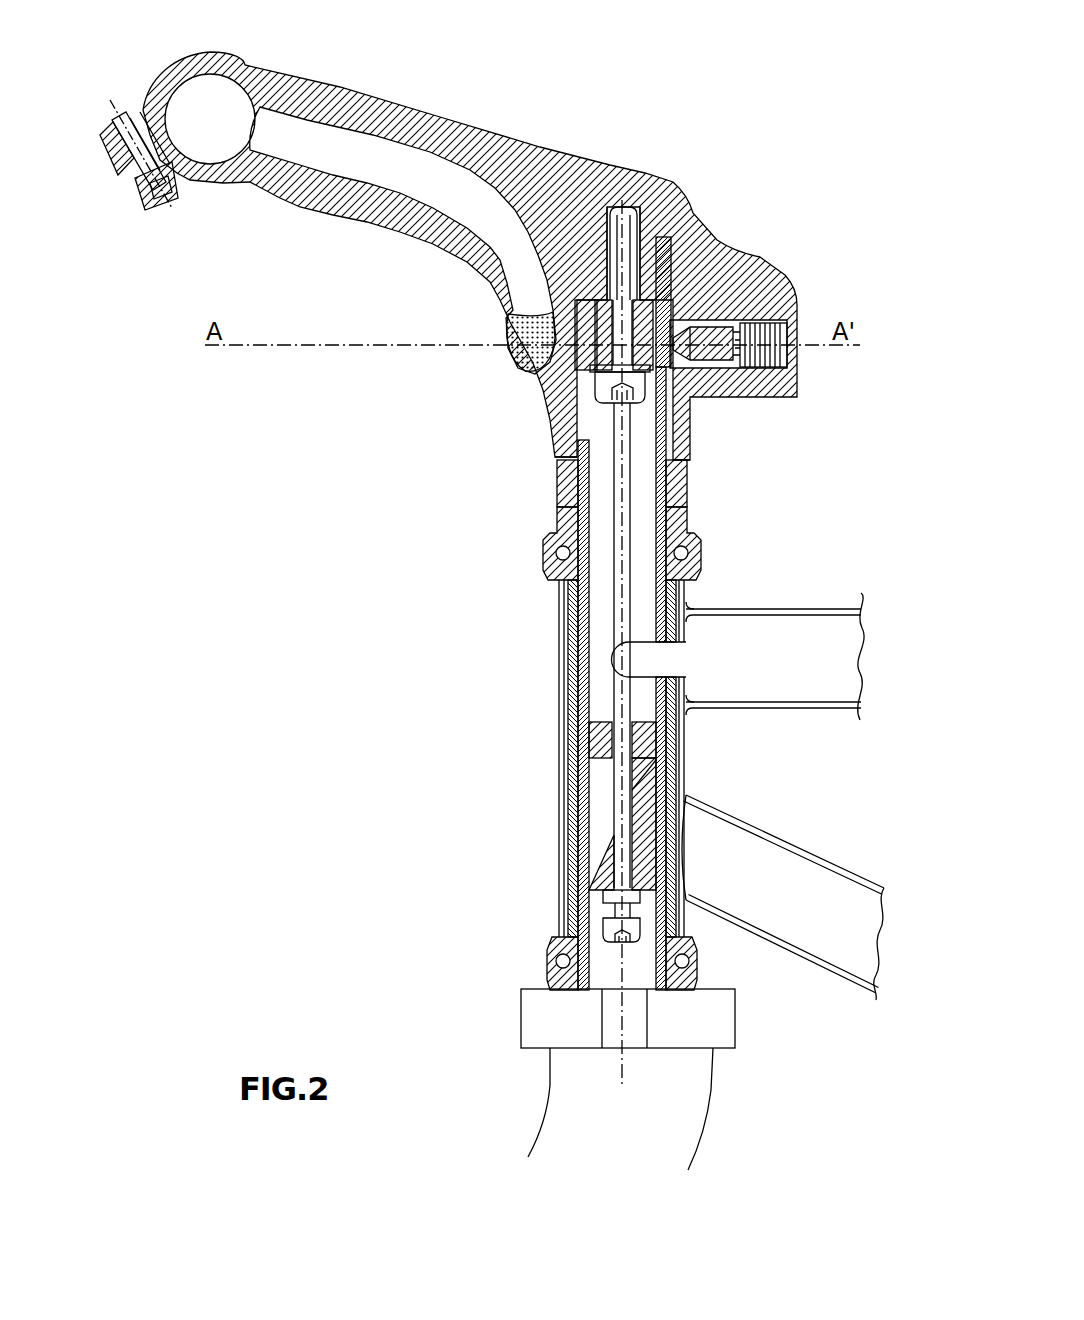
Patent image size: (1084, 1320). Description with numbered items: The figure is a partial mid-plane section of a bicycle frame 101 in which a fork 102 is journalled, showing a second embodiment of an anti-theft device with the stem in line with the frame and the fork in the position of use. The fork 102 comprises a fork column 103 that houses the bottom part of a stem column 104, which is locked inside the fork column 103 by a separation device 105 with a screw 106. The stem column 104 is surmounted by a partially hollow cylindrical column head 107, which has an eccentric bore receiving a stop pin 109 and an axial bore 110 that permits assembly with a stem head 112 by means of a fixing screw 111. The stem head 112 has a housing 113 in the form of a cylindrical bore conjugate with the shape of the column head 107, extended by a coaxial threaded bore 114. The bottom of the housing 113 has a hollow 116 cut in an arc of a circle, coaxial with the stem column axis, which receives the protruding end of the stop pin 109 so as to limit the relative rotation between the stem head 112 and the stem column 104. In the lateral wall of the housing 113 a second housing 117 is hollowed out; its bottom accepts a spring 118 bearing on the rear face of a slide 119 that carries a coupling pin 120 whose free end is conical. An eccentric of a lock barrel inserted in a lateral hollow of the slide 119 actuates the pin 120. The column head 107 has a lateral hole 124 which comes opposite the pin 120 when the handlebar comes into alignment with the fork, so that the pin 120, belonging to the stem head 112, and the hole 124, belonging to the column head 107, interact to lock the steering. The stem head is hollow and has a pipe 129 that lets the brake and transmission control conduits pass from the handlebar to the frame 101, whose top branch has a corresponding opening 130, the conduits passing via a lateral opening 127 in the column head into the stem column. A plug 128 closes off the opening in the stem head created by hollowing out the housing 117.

The bicycle frame 101 is at (767, 828).
The fork 102 is at (700, 1126).
The fork column 103 is at (575, 886).
The stem column 104 is at (575, 697).
The separation device 105 is at (589, 737).
The screw 106 is at (613, 804).
The column head 107 is at (667, 462).
The stop pin 109 is at (672, 300).
The axial bore 110 is at (577, 305).
The fixing screw 111 is at (608, 255).
The stem head 112 is at (470, 152).
The housing 113 is at (565, 427).
The threaded bore 114 is at (607, 233).
The hollow 116 is at (664, 262).
The second housing 117 is at (722, 330).
The spring 118 is at (773, 403).
The slide 119 is at (747, 400).
The coupling pin 120 is at (707, 350).
The lateral hole 124 is at (593, 356).
The lateral opening 127 is at (580, 462).
The plug 128 is at (552, 352).
The pipe 129 is at (368, 165).
The opening 130 is at (668, 660).